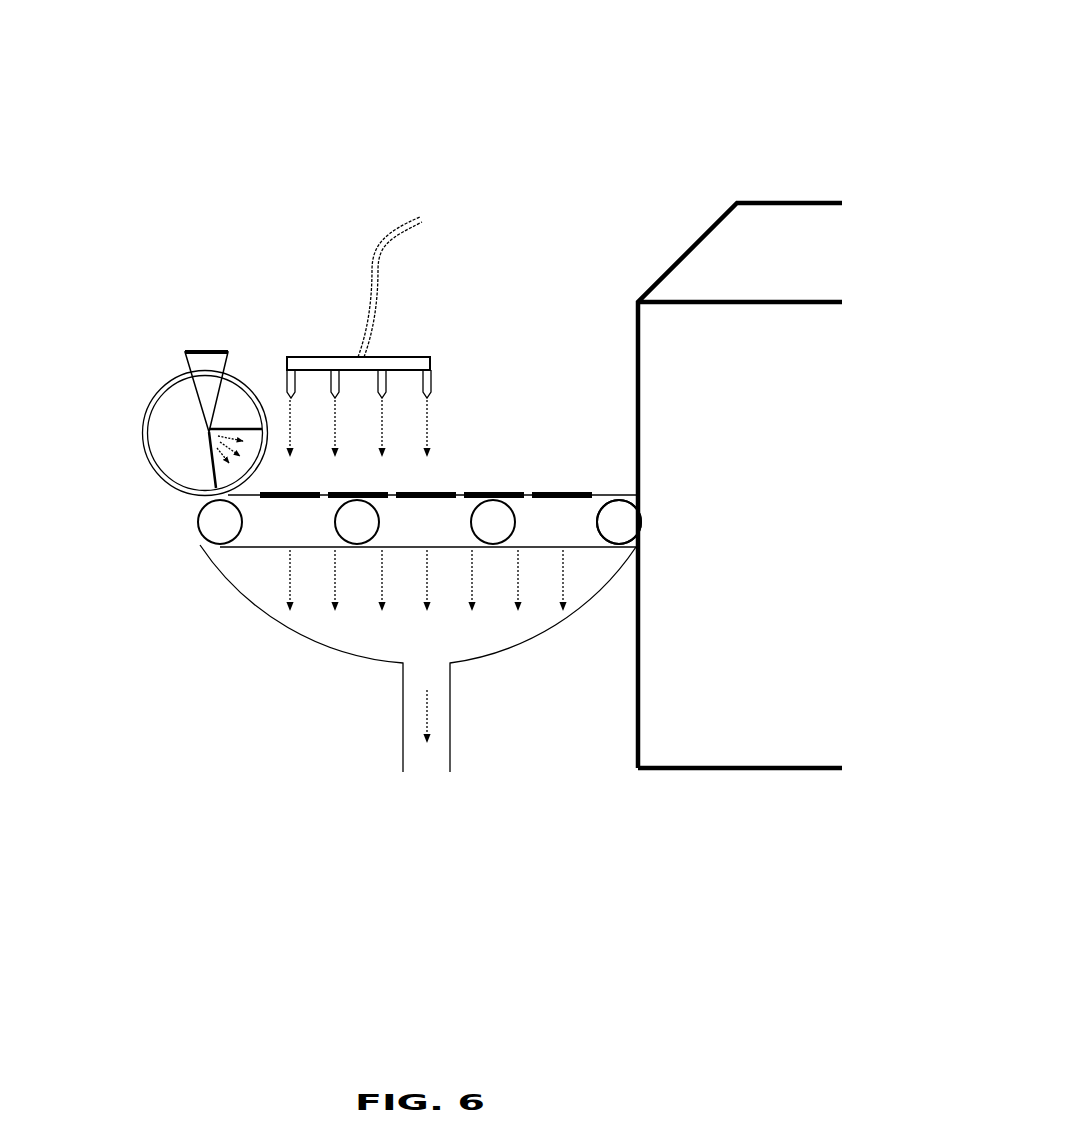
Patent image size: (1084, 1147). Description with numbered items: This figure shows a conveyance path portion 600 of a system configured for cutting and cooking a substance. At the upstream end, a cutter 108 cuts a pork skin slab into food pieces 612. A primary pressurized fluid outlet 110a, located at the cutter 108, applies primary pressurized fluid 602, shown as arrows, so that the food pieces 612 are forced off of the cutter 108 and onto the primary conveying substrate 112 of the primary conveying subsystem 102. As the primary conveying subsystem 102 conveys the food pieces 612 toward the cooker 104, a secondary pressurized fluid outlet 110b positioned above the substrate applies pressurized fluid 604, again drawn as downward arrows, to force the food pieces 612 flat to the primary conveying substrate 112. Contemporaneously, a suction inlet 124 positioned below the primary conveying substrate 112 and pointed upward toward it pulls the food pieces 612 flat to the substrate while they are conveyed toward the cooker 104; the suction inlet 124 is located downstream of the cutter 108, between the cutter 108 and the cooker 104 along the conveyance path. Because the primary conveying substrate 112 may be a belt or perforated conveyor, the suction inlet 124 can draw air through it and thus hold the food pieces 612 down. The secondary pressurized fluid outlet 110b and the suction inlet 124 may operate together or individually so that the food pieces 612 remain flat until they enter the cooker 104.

The conveyance path portion 600 is at (621, 54).
The cooker 104 is at (731, 236).
The cutter 108 is at (147, 408).
The primary pressurized fluid outlet 110a is at (207, 433).
The primary pressurized fluid 602 is at (213, 450).
The secondary pressurized fluid outlet 110b is at (428, 356).
The pressurized fluid 604 is at (429, 443).
The primary conveying subsystem 102 is at (203, 538).
The food pieces 612 is at (433, 492).
The primary conveying substrate 112 is at (616, 494).
The suction inlet 124 is at (312, 635).